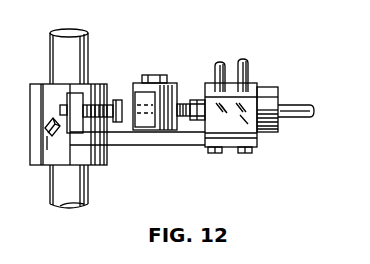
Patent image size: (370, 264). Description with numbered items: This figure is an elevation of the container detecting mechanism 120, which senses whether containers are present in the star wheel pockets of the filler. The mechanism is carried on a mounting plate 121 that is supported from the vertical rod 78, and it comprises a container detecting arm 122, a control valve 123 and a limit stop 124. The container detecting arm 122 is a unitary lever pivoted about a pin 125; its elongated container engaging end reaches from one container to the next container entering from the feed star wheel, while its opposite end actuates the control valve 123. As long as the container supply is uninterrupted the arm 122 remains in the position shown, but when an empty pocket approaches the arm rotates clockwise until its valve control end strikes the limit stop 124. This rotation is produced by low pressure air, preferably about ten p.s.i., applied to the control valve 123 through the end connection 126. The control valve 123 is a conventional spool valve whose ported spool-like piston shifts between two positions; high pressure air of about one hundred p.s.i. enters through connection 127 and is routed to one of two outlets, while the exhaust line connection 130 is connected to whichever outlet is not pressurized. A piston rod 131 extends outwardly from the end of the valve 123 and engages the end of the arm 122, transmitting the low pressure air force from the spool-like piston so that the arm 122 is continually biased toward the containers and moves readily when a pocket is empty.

The vertical rod 78 is at (84, 38).
The container detecting mechanism 120 is at (228, 153).
The mounting plate 121 is at (125, 147).
The container detecting arm 122 is at (178, 88).
The control valve 123 is at (256, 123).
The limit stop 124 is at (117, 100).
The pin 125 is at (152, 78).
The end connection 126 is at (313, 110).
The connection 127 is at (247, 60).
The exhaust line connection 130 is at (217, 63).
The piston rod 131 is at (186, 118).